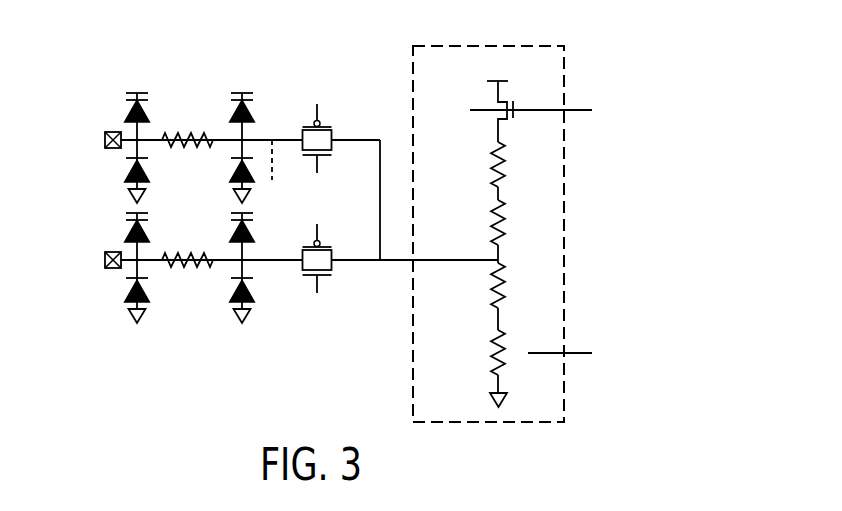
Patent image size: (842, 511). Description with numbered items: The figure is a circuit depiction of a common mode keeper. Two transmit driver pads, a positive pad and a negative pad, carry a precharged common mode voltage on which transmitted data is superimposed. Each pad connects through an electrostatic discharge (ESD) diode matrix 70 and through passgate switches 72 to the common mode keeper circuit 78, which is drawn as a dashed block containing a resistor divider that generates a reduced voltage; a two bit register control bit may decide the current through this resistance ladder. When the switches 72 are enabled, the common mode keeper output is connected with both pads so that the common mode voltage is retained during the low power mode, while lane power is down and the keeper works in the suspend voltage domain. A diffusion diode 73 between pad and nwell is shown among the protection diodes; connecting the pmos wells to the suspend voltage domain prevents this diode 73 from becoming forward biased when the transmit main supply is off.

The electrostatic discharge (ESD) diode matrix 70 is at (181, 94).
The passgate switches 72 is at (333, 135).
The diffusion diode 73 is at (123, 288).
The common mode keeper circuit 78 is at (565, 235).